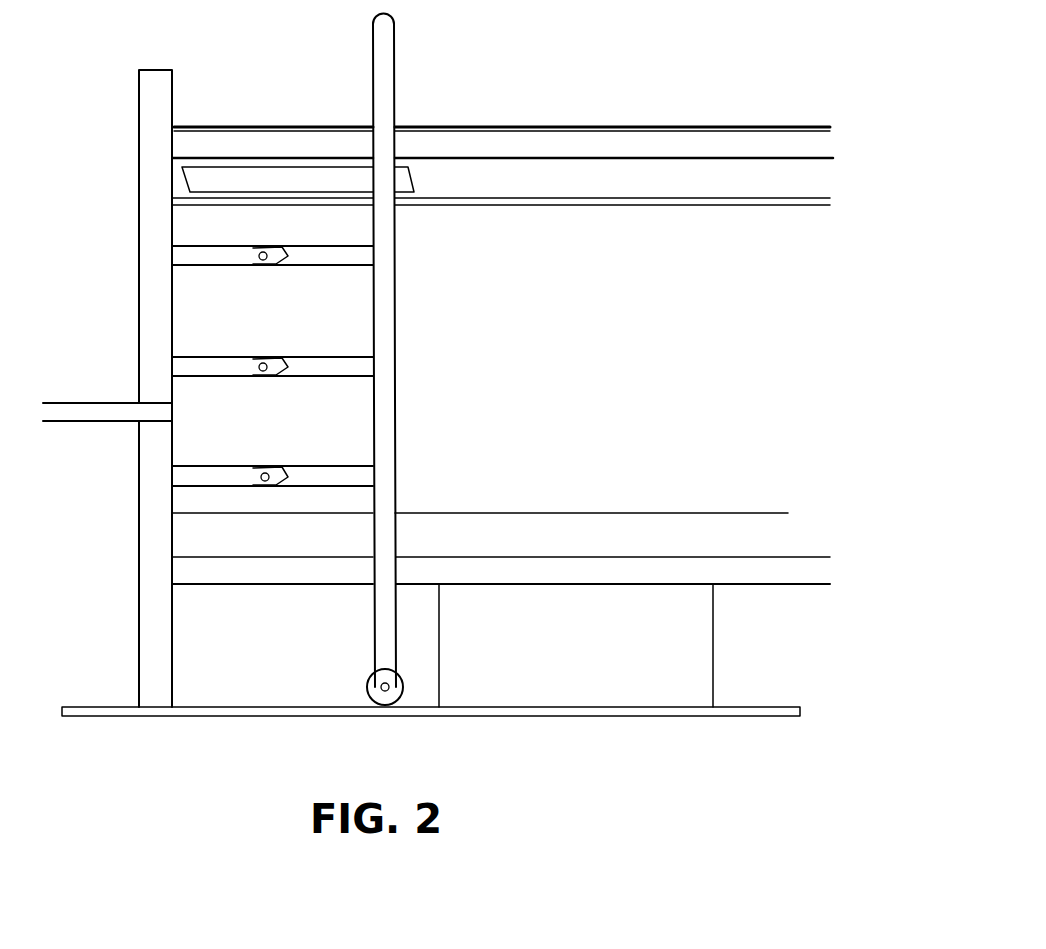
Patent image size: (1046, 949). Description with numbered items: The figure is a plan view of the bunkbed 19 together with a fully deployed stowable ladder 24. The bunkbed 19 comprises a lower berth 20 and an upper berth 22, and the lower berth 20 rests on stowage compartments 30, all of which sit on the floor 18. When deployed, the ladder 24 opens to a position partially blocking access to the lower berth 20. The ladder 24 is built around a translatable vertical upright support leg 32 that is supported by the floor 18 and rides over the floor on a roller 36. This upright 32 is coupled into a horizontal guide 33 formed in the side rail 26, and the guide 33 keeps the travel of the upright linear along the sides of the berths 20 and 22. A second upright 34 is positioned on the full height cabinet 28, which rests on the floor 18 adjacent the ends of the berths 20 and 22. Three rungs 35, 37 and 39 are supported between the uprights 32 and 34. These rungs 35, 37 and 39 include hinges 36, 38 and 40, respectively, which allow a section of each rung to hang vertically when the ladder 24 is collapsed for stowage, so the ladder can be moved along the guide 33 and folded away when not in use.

The floor 18 is at (757, 705).
The bunkbed 19 is at (693, 369).
The lower berth 20 is at (628, 510).
The upper berth 22 is at (553, 125).
The ladder 24 is at (394, 417).
The side rail 26 is at (623, 180).
The full height cabinet 28 is at (85, 566).
The stowage compartments 30 is at (592, 648).
The vertical upright support leg 32 is at (394, 297).
The horizontal guide 33 is at (270, 172).
The second upright 34 is at (153, 99).
The rung 35 is at (308, 266).
The roller 36 is at (263, 246).
The rung 37 is at (297, 377).
The hinge 38 is at (268, 357).
The rung 39 is at (215, 466).
The hinge 40 is at (265, 477).